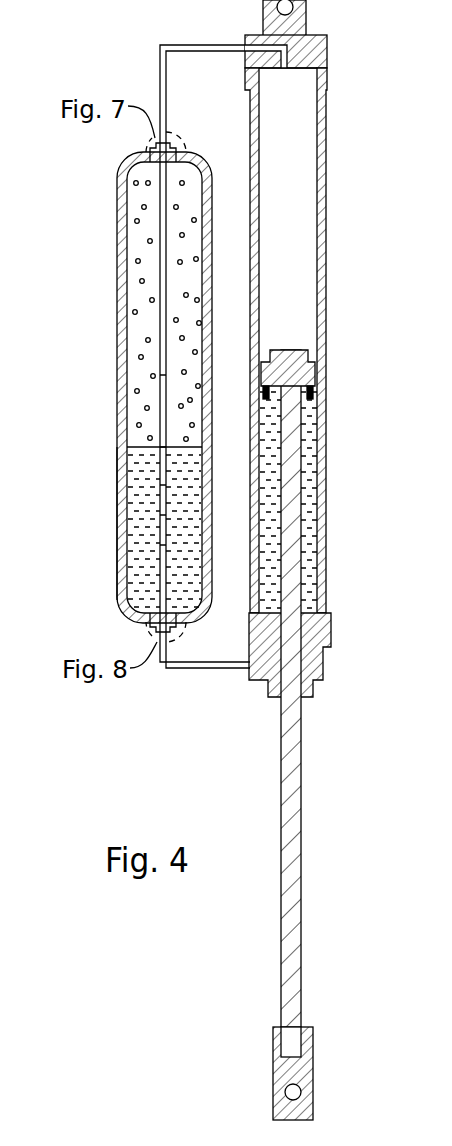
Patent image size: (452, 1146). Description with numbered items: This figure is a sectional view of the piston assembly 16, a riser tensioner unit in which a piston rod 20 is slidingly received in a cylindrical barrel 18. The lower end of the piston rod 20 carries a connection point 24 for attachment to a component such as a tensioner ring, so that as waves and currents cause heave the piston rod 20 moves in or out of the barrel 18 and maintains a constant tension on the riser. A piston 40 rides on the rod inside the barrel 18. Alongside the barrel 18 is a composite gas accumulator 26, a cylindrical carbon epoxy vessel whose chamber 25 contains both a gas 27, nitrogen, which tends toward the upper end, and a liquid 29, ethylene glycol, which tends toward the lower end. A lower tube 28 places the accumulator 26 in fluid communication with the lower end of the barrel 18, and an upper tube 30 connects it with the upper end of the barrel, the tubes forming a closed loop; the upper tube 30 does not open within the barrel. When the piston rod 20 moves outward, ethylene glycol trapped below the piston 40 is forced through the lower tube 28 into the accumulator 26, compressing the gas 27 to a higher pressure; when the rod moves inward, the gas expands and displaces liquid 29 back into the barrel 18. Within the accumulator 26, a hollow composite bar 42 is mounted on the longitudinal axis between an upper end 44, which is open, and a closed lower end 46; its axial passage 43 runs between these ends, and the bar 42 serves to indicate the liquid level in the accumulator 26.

The piston assembly 16 is at (343, 200).
The cylindrical barrel 18 is at (325, 130).
The piston rod 20 is at (281, 757).
The connection point 24 is at (302, 1092).
The chamber 25 is at (137, 326).
The composite gas accumulator 26 is at (118, 473).
The gas 27 is at (142, 267).
The lower tube 28 is at (201, 668).
The liquid 29 is at (138, 518).
The upper tube 30 is at (201, 45).
The piston 40 is at (297, 350).
The composite bar 42 is at (159, 407).
The axial passage 43 is at (165, 375).
The upper end 44 is at (148, 168).
The lower end 46 is at (146, 612).